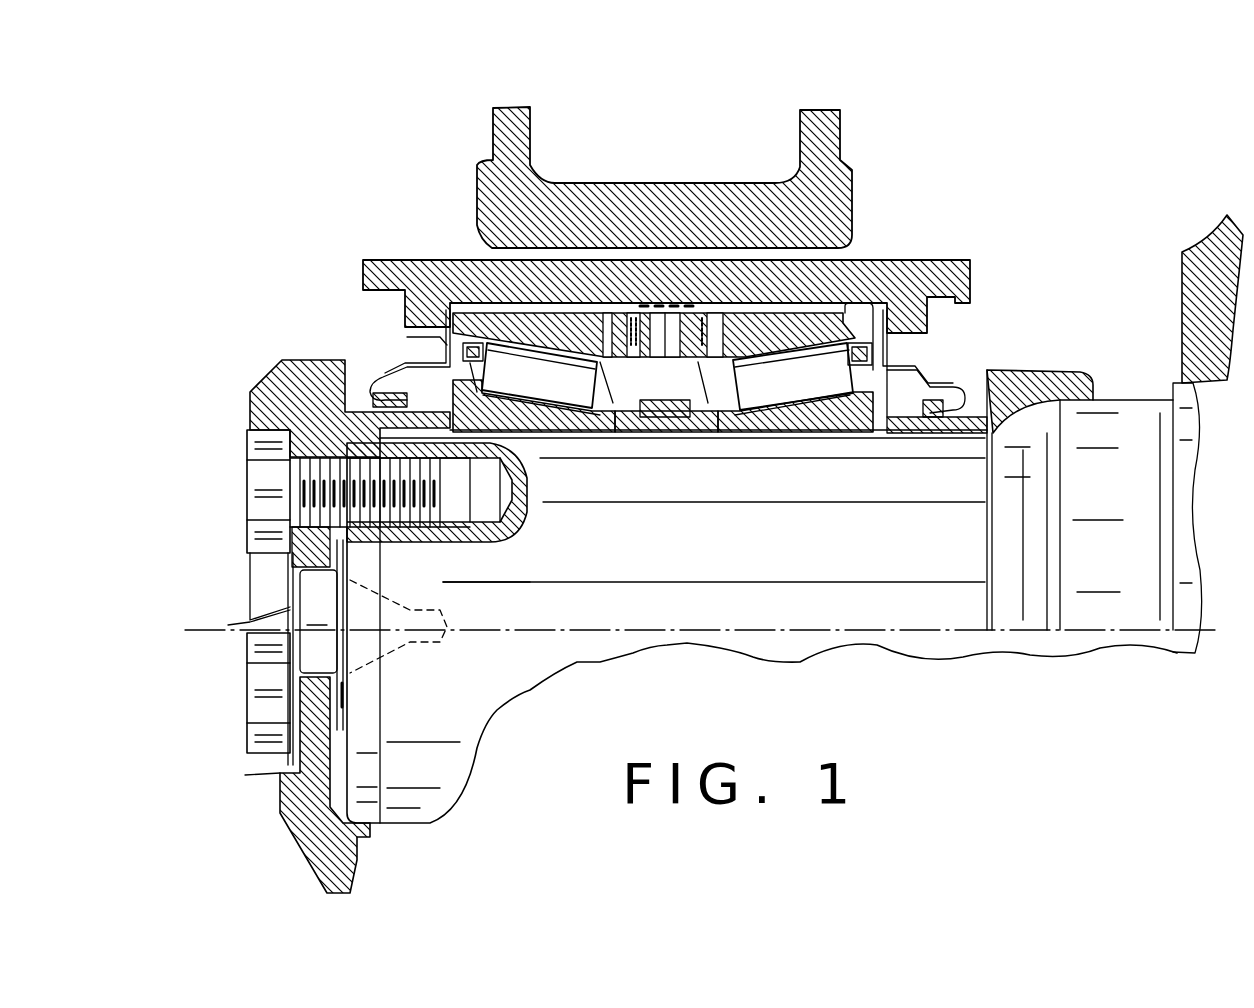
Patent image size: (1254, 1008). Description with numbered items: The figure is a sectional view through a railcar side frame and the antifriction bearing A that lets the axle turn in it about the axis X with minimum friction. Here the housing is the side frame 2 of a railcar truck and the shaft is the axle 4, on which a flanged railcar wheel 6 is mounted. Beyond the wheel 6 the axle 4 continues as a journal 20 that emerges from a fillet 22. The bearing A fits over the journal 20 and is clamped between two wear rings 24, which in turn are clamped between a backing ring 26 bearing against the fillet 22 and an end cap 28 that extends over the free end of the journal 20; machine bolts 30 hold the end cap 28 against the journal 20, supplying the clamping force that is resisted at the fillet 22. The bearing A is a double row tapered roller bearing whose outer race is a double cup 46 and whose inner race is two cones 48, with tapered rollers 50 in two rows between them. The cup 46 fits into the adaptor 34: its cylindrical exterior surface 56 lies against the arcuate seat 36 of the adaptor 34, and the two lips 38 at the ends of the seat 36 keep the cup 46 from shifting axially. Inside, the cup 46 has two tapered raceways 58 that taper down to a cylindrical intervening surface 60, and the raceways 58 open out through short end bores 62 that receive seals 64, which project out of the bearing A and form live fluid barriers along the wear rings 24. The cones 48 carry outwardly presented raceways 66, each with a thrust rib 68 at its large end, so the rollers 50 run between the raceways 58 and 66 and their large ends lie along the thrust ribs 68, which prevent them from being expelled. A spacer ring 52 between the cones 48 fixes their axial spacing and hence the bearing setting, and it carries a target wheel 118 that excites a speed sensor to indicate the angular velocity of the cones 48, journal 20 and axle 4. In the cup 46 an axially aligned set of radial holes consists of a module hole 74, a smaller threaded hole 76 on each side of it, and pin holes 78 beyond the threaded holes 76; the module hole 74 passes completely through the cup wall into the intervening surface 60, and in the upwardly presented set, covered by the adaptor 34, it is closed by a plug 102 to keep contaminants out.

The side frame 2 is at (826, 142).
The axle 4 is at (1107, 604).
The flanged railcar wheel 6 is at (1180, 253).
The journal 20 is at (892, 605).
The fillet 22 is at (1027, 413).
The wear rings 24 is at (363, 393).
The backing ring 26 is at (1097, 382).
The end cap 28 is at (293, 843).
The machine bolts 30 is at (260, 486).
The adaptor 34 is at (440, 270).
The arcuate seat 36 is at (553, 320).
The lips 38 is at (405, 318).
The double cup 46 is at (873, 305).
The cones 48 is at (587, 443).
The tapered rollers 50 is at (555, 443).
The spacer ring 52 is at (612, 408).
The cylindrical exterior surface 56 is at (880, 270).
The tapered raceways 58 is at (850, 395).
The cylindrical intervening surface 60 is at (697, 417).
The end bores 62 is at (403, 368).
The seals 64 is at (370, 382).
The raceways 66 is at (793, 387).
The thrust rib 68 is at (889, 420).
The module hole 74 is at (655, 320).
The threaded holes 76 is at (680, 325).
The pin holes 78 is at (720, 330).
The plug 102 is at (661, 205).
The target wheel 118 is at (657, 432).
The antifriction bearing A is at (510, 310).
The axis X is at (713, 631).